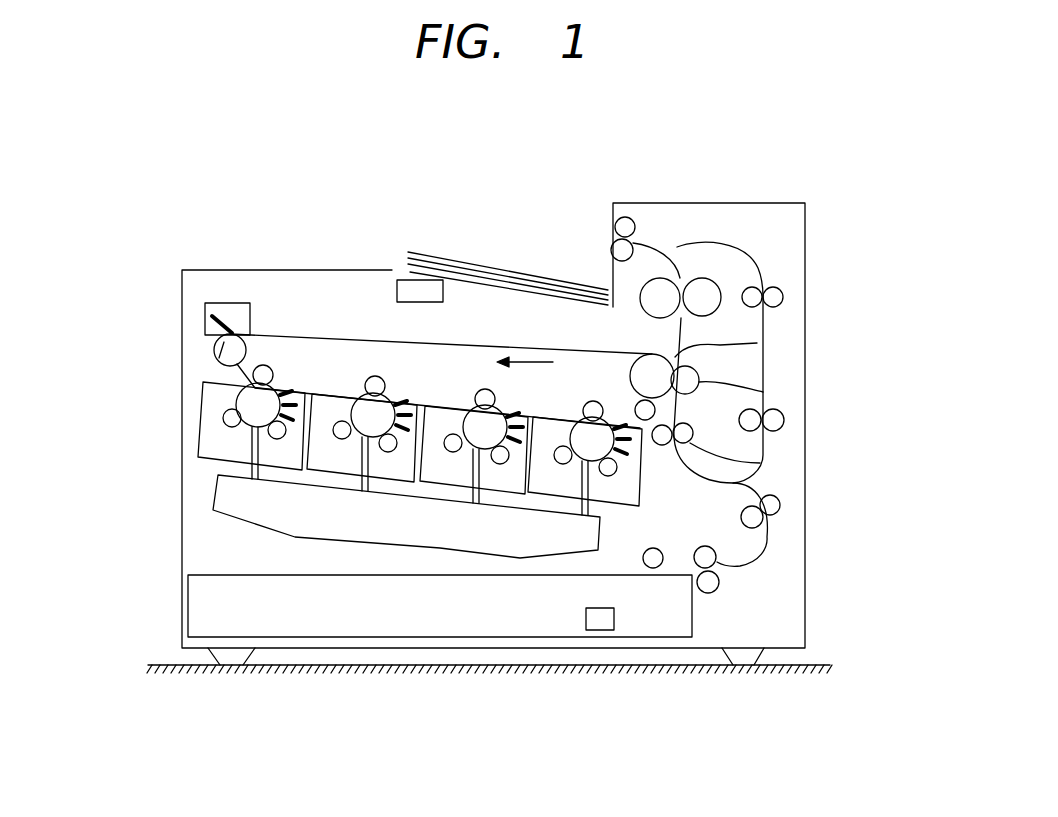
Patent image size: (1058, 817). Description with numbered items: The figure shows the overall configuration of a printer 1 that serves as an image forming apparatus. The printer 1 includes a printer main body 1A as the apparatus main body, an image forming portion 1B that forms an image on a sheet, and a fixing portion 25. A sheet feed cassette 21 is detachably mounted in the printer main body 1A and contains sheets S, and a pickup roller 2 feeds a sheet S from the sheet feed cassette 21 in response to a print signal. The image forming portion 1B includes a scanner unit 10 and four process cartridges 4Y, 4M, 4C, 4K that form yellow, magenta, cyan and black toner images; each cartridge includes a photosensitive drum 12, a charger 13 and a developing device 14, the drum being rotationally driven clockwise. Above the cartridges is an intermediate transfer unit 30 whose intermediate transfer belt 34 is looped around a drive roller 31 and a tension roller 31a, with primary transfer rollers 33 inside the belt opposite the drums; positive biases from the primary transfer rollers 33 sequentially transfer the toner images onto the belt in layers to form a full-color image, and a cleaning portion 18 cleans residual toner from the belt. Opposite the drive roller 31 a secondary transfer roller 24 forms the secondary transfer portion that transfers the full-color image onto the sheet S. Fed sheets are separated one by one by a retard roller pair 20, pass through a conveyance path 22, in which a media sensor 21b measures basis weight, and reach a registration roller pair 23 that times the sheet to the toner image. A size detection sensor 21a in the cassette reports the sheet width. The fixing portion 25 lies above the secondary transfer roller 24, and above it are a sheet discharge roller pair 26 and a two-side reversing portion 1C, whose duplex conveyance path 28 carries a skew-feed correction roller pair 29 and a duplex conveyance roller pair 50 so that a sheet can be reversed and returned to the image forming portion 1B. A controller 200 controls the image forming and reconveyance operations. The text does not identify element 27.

The printer 1 is at (840, 143).
The printer main body 1A is at (762, 203).
The image forming portion 1B is at (212, 368).
The two-side reversing portion 1C is at (757, 227).
The pickup roller 2 is at (657, 548).
The process cartridge 4Y is at (223, 419).
The process cartridge 4M is at (333, 407).
The process cartridge 4C is at (440, 420).
The process cartridge 4K is at (550, 430).
The scanner unit 10 is at (447, 537).
The photosensitive drum 12 is at (251, 417).
The charger 13 is at (258, 427).
The developing device 14 is at (215, 428).
The cleaning portion 18 is at (217, 300).
The retard roller pair 20 is at (717, 563).
The sheet feed cassette 21 is at (650, 620).
The size detection sensor 21a is at (600, 630).
The media sensor 21b is at (762, 566).
The conveyance path 22 is at (767, 552).
The registration roller pair 23 is at (760, 463).
The secondary transfer roller 24 is at (763, 392).
The fixing portion 25 is at (612, 278).
The sheet discharge roller pair 26 is at (613, 224).
The top cover 27 is at (385, 270).
The duplex conveyance path 28 is at (757, 260).
The skew-feed correction roller pair 29 is at (783, 280).
The intermediate transfer unit 30 is at (302, 362).
The drive roller 31 is at (757, 343).
The tension roller 31a is at (212, 342).
The primary transfer roller 33 is at (213, 347).
The intermediate transfer belt 34 is at (347, 335).
The duplex conveyance roller pair 50 is at (787, 420).
The controller 200 is at (418, 288).
The sheet S is at (490, 258).